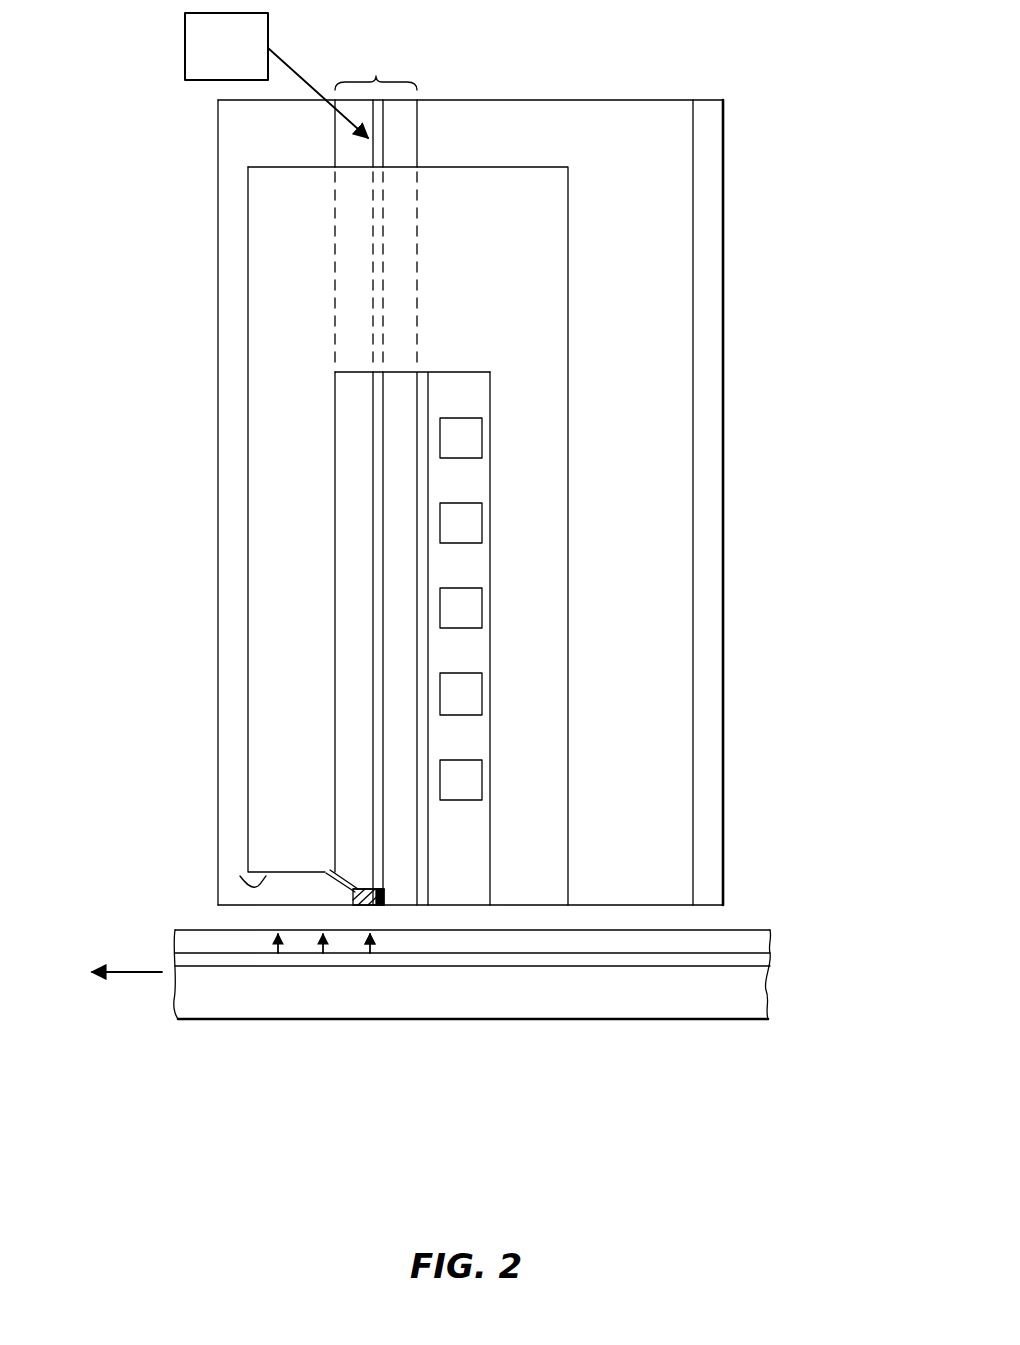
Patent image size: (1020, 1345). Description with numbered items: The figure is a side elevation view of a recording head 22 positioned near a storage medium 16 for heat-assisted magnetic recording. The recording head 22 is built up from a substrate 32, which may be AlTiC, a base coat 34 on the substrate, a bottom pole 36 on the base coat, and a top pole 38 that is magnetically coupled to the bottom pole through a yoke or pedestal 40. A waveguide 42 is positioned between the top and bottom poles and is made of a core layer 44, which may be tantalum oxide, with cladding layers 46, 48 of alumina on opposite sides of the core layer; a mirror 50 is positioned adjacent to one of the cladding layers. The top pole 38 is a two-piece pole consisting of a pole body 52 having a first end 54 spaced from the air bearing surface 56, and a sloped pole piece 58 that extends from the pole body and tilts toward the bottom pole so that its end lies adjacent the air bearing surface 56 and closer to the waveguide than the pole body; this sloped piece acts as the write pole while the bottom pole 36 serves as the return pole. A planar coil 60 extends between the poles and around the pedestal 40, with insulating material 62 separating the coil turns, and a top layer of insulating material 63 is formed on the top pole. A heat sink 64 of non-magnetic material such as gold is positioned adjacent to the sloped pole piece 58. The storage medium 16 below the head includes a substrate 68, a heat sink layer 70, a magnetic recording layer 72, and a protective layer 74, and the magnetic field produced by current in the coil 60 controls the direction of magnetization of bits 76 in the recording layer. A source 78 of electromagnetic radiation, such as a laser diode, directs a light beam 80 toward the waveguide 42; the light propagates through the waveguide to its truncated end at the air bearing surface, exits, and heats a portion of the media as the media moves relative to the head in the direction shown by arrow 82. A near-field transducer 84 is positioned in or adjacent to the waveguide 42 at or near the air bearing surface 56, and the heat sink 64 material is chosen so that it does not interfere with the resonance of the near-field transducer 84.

The storage medium 16 is at (768, 917).
The recording head 22 is at (162, 190).
The substrate 32 is at (703, 116).
The base coat 34 is at (636, 124).
The bottom pole 36 is at (557, 562).
The top pole 38 is at (260, 613).
The pedestal 40 is at (480, 165).
The waveguide 42 is at (376, 203).
The core layer 44 is at (382, 473).
The cladding layer 46 is at (395, 415).
The cladding layer 48 is at (353, 542).
The mirror 50 is at (420, 380).
The pole body 52 is at (262, 745).
The first end 54 is at (252, 888).
The air bearing surface 56 is at (467, 906).
The sloped pole piece 58 is at (352, 873).
The planar coil 60 is at (473, 613).
The insulating material 62 is at (483, 853).
The top layer of insulating material 63 is at (233, 280).
The heat sink 64 is at (363, 890).
The substrate 68 is at (698, 1000).
The heat sink layer 70 is at (773, 963).
The magnetic recording layer 72 is at (753, 945).
The protective layer 74 is at (743, 928).
The bits 76 is at (273, 948).
The source of electromagnetic radiation 78 is at (185, 46).
The light beam 80 is at (303, 72).
The arrow 82 is at (135, 972).
The near-field transducer 84 is at (390, 893).